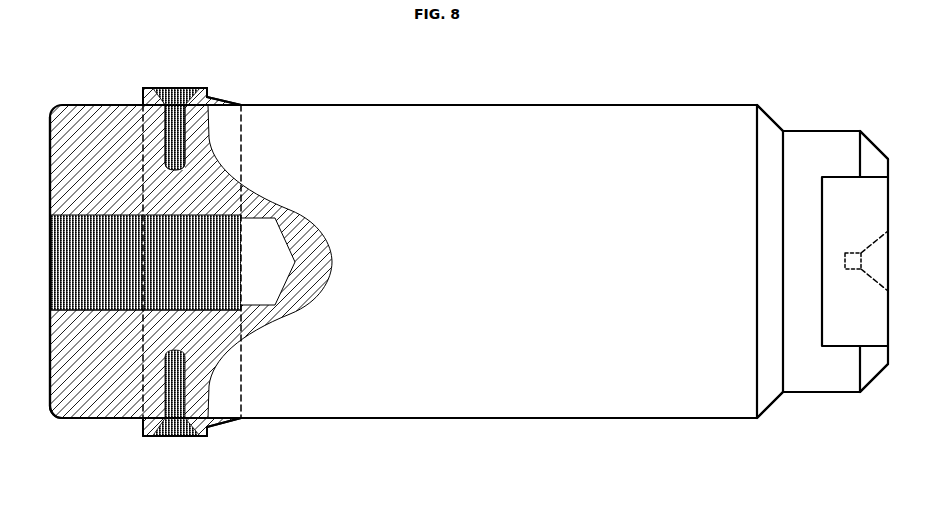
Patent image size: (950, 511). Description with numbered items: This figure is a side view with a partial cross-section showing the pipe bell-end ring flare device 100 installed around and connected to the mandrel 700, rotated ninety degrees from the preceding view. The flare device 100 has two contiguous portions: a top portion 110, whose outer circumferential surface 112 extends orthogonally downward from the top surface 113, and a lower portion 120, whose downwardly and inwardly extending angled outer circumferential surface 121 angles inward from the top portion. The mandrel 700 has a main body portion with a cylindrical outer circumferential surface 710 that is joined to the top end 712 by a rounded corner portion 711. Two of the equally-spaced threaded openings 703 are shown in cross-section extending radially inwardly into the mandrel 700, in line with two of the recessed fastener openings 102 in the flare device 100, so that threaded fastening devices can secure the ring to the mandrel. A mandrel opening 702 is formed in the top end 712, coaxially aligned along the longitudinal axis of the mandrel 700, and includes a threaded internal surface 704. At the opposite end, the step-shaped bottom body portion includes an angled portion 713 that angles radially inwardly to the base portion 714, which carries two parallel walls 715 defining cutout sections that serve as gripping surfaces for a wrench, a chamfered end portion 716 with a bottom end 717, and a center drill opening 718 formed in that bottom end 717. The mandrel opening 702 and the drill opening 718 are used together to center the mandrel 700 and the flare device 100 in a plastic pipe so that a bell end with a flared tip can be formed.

The pipe bell-end ring flare device 100 is at (135, 82).
The recessed fastener openings 102 is at (172, 428).
The top portion 110 is at (177, 84).
The outer circumferential surface 112 is at (145, 88).
The top surface 113 is at (143, 104).
The lower portion 120 is at (221, 94).
The downwardly and inwardly extending angled outer circumferential surface 121 is at (222, 101).
The mandrel 700 is at (315, 78).
The mandrel opening 702 is at (125, 259).
The threaded openings 703 is at (179, 116).
The threaded internal surface 704 is at (82, 304).
The cylindrical outer circumferential surface 710 is at (435, 105).
The rounded corner portion 711 is at (50, 418).
The top end 712 is at (50, 323).
The angled portion 713 is at (765, 385).
The base portion 714 is at (823, 396).
The walls 715 is at (818, 157).
The chamfered end portion 716 is at (870, 157).
The bottom end 717 is at (888, 338).
The center drill opening 718 is at (866, 261).